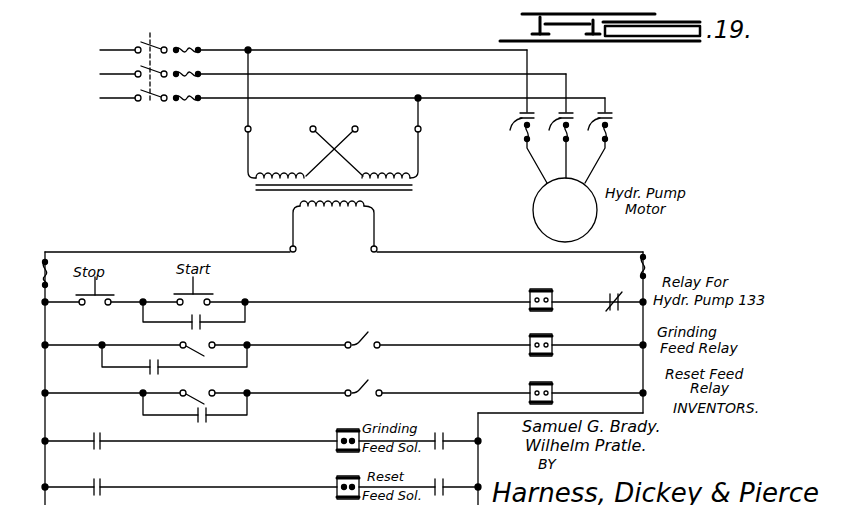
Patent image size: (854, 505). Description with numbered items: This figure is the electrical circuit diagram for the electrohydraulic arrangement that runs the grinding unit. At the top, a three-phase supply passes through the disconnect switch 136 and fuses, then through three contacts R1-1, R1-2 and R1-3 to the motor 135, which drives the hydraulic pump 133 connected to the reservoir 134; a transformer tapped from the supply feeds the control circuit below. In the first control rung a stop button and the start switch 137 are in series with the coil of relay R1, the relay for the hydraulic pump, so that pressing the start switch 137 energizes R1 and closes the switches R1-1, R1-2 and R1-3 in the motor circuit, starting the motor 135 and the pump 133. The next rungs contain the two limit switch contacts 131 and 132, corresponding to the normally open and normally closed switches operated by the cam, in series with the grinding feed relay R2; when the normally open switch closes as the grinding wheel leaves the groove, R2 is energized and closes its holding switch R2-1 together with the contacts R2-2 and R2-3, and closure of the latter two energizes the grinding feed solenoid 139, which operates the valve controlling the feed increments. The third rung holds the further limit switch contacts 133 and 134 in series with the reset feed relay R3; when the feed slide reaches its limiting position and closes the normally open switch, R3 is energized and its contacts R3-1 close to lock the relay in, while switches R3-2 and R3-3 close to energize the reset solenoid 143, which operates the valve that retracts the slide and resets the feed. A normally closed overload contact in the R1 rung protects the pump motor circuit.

The disconnect switch 136 is at (156, 46).
The motor 135 is at (536, 211).
The switch R1-1 is at (516, 123).
The switch R1-2 is at (556, 128).
The switch R1-3 is at (613, 118).
The start switch 137 is at (177, 294).
The limit switch 131 is at (206, 346).
The limit switch 132 is at (362, 329).
The pump 133 is at (206, 358).
The reservoir 134 is at (281, 381).
The relay R1 is at (553, 292).
The grinding feed relay R2 is at (553, 335).
The relay R3 is at (556, 384).
The holding switch R2-1 is at (147, 369).
The contacts R3-1 is at (206, 419).
The switch R2-2 is at (103, 447).
The switch R3-2 is at (103, 481).
The switch R2-3 is at (438, 430).
The switch R3-3 is at (436, 479).
The grinding feed solenoid 139 is at (336, 432).
The solenoid 143 is at (336, 479).